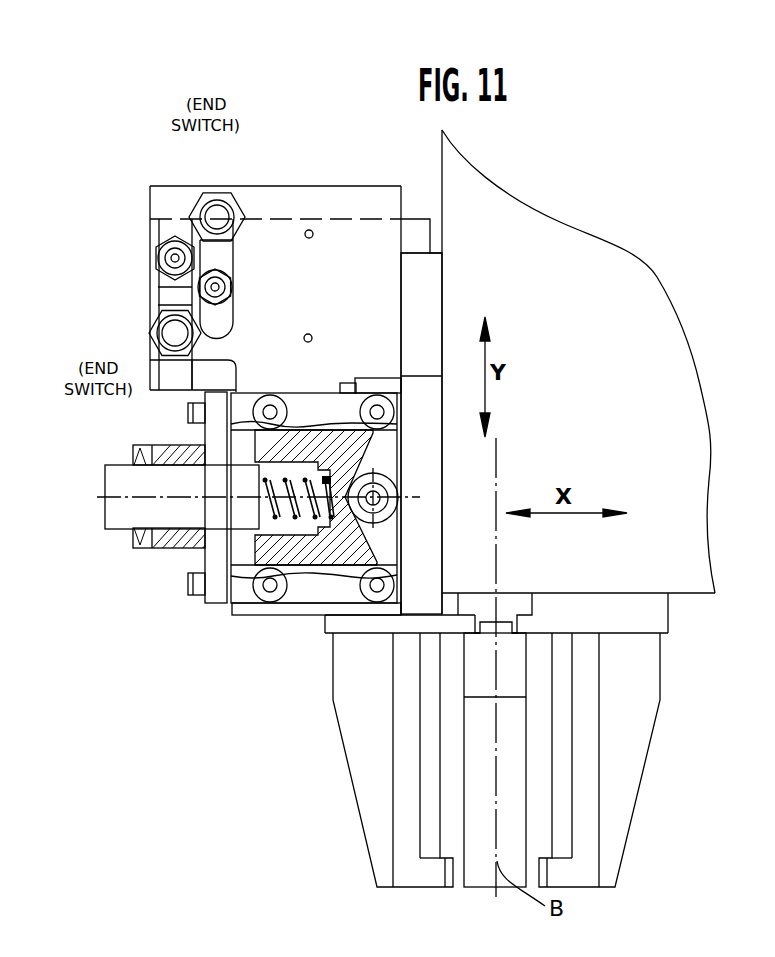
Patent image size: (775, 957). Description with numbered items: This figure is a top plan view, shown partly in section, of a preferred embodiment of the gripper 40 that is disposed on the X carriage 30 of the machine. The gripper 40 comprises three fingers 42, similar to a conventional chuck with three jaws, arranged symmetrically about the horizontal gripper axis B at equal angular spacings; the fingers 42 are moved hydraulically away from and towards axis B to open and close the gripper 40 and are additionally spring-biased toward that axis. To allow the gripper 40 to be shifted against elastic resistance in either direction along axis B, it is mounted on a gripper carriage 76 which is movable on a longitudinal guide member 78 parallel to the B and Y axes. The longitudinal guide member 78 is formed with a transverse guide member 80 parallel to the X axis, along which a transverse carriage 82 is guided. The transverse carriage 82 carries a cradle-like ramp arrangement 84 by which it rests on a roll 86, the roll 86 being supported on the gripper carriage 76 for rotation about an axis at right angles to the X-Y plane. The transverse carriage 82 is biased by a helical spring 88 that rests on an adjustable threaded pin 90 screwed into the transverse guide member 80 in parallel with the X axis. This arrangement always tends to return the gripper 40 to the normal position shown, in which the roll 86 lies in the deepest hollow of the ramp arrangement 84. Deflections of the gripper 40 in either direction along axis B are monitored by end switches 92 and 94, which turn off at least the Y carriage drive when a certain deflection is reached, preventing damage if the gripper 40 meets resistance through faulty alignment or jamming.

The X carriage 30 is at (615, 263).
The gripper 40 is at (703, 682).
The fingers 42 is at (362, 764).
The gripper carriage 76 is at (415, 228).
The longitudinal guide member 78 is at (432, 462).
The transverse guide member 80 is at (237, 583).
The transverse carriage 82 is at (300, 555).
The cradle-like ramp arrangement 84 is at (401, 538).
The roll 86 is at (401, 505).
The spring 88 is at (287, 478).
The threaded pin 90 is at (120, 508).
The end switch 92 is at (170, 334).
The end switch 94 is at (217, 208).